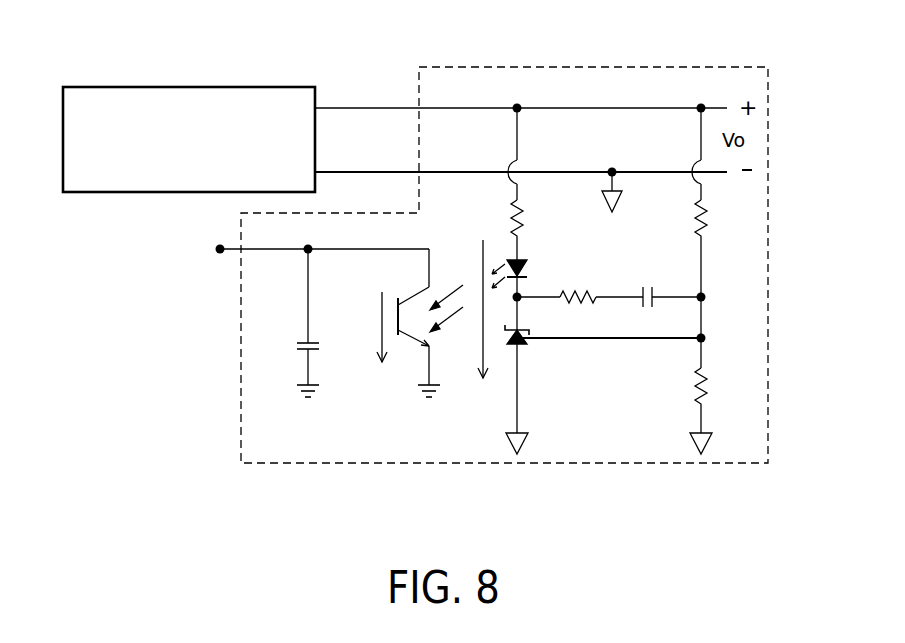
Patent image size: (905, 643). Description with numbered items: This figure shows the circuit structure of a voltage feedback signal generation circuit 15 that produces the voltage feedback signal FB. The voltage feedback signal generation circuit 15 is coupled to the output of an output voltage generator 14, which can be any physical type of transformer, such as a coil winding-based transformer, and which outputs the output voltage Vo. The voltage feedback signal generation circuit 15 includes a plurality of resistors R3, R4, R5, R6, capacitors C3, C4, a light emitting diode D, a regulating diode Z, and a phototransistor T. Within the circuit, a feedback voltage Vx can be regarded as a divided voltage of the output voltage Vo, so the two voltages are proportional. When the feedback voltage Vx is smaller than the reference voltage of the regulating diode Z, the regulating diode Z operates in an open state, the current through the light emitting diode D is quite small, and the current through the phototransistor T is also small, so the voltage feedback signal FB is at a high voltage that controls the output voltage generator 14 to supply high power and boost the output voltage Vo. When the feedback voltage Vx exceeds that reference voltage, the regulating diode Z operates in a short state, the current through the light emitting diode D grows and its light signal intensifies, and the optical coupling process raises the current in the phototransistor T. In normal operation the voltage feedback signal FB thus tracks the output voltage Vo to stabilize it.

The output voltage generator 14 is at (200, 87).
The voltage feedback signal generation circuit 15 is at (598, 67).
The resistor R3 is at (536, 230).
The resistor R4 is at (719, 248).
The resistor R5 is at (578, 282).
The resistor R6 is at (717, 400).
The capacitor C3 is at (644, 284).
The capacitor C4 is at (291, 323).
The light emitting diode D is at (518, 270).
The regulating diode Z is at (525, 347).
The phototransistor T is at (430, 341).